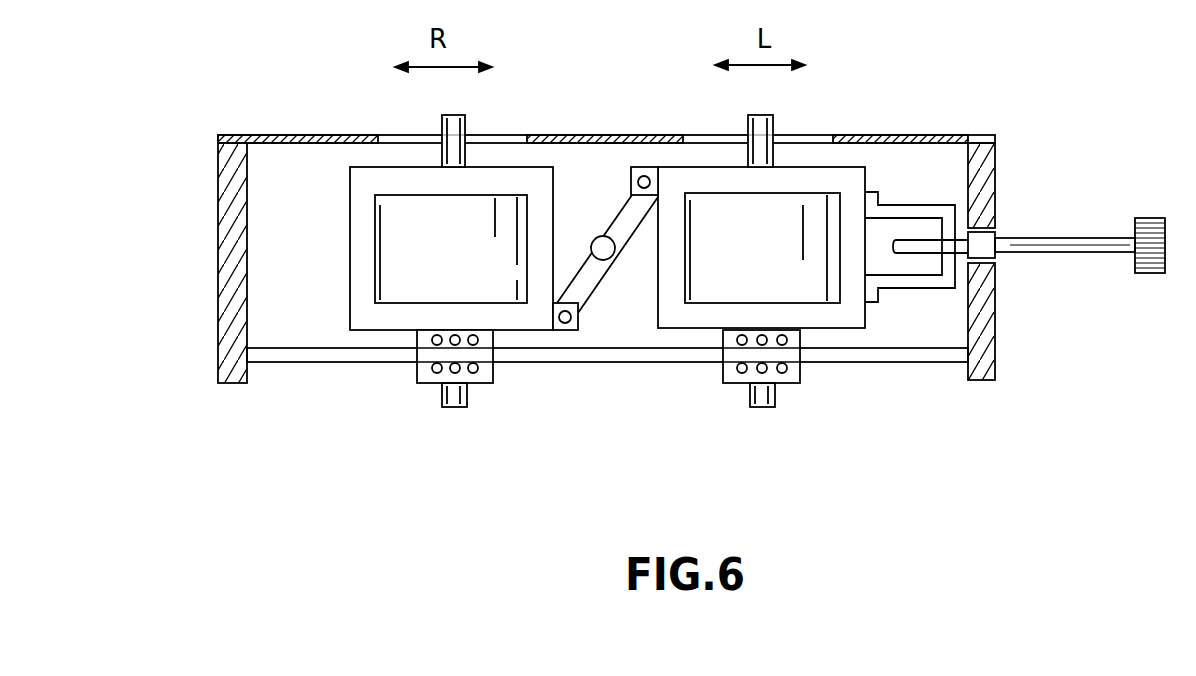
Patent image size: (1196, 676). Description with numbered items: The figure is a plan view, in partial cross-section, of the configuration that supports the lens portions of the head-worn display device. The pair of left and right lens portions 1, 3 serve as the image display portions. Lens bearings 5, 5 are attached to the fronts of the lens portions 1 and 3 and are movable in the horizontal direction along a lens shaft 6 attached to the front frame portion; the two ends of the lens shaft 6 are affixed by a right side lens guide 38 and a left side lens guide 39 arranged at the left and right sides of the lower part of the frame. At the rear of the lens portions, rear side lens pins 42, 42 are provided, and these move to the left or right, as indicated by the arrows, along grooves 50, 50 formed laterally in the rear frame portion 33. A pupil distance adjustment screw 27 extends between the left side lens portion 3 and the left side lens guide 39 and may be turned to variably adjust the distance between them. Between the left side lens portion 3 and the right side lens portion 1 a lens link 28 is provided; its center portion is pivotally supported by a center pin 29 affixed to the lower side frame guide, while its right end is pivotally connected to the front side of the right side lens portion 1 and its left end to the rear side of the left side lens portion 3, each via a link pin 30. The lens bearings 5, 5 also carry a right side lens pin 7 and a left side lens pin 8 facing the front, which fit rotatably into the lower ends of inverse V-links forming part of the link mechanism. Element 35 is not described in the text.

The right side lens portion 1 is at (377, 203).
The left side lens portion 3 is at (812, 195).
The lens bearing 5 is at (423, 385).
The lens shaft 6 is at (333, 364).
The right side lens pin 7 is at (457, 407).
The left side lens pin 8 is at (760, 407).
The pupil distance adjustment screw 27 is at (1088, 238).
The lens link 28 is at (602, 298).
The center pin 29 is at (600, 240).
The link pin 30 is at (644, 168).
The rear frame portion 33 is at (553, 135).
The holder 35 is at (917, 290).
The right side lens guide 38 is at (225, 385).
The left side lens guide 39 is at (985, 148).
The rear side lens pin 42 is at (440, 128).
The groove 50 is at (502, 135).